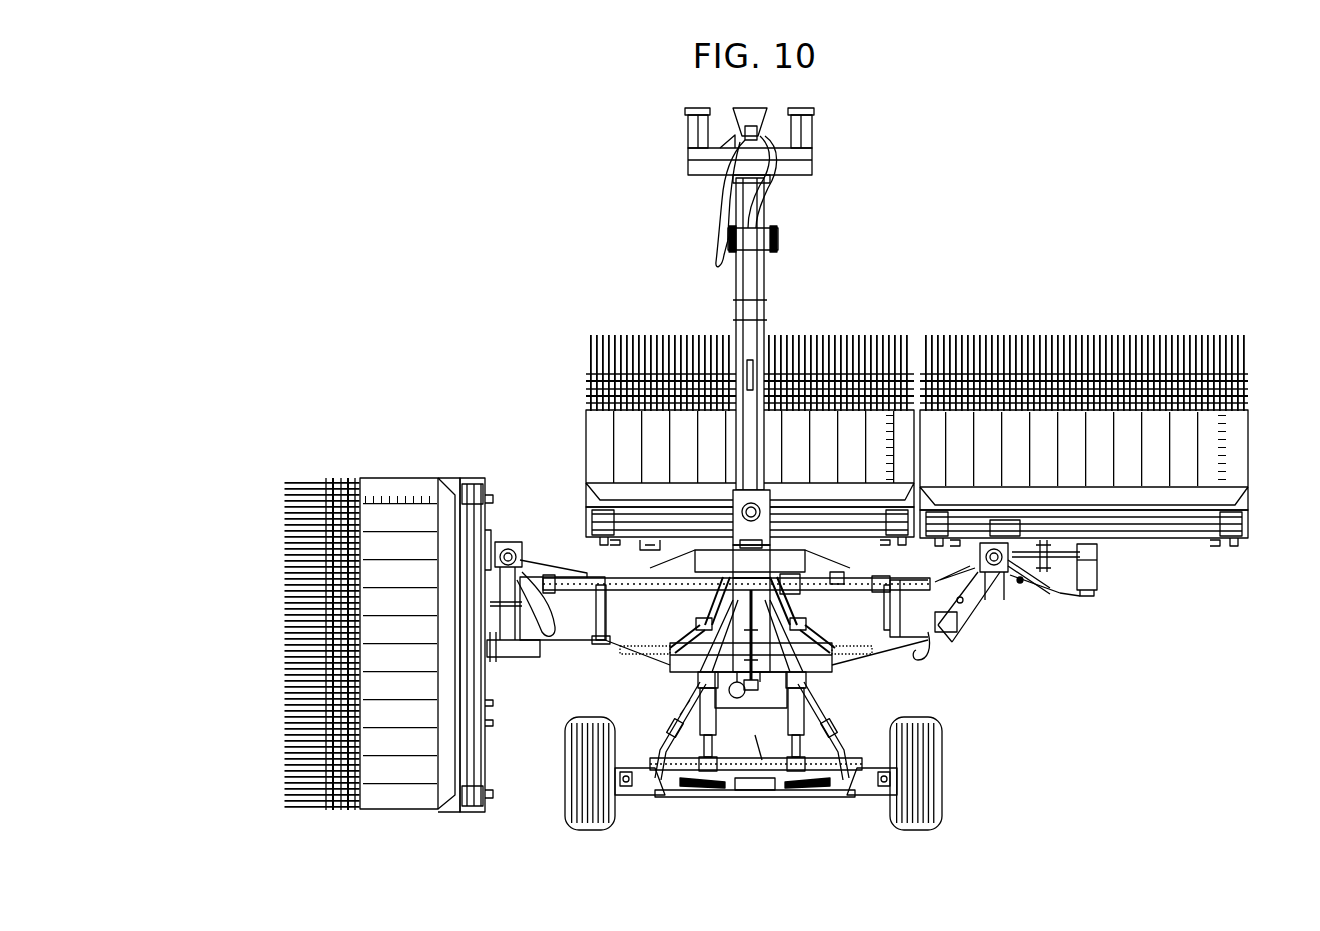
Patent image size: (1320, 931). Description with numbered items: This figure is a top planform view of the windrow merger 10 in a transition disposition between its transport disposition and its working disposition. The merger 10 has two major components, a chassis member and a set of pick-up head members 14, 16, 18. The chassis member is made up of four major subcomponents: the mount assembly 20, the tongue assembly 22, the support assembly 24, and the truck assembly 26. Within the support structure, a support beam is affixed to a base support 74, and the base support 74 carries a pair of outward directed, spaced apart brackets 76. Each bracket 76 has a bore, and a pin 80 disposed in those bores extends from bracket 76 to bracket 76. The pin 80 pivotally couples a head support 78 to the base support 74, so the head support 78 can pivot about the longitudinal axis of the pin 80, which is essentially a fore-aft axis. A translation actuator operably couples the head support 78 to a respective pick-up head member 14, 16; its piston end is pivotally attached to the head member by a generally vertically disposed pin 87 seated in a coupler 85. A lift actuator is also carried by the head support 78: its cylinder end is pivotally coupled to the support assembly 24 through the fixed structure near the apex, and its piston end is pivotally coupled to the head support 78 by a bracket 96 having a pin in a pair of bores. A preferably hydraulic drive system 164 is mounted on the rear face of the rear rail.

The windrow merger 10 is at (652, 203).
The pick-up head member 14 is at (290, 716).
The pick-up head member 16 is at (1005, 340).
The pick-up head member 18 is at (815, 340).
The mount assembly 20 is at (690, 148).
The tongue assembly 22 is at (738, 292).
The support assembly 24 is at (790, 680).
The truck assembly 26 is at (690, 797).
The base support 74 is at (870, 632).
The brackets 76 is at (920, 650).
The head support 78 is at (942, 590).
The pin 80 is at (886, 604).
The coupler 85 is at (1028, 565).
The pin 87 is at (1008, 570).
The bracket 96 is at (900, 588).
The hydraulic drive system 164 is at (1047, 553).